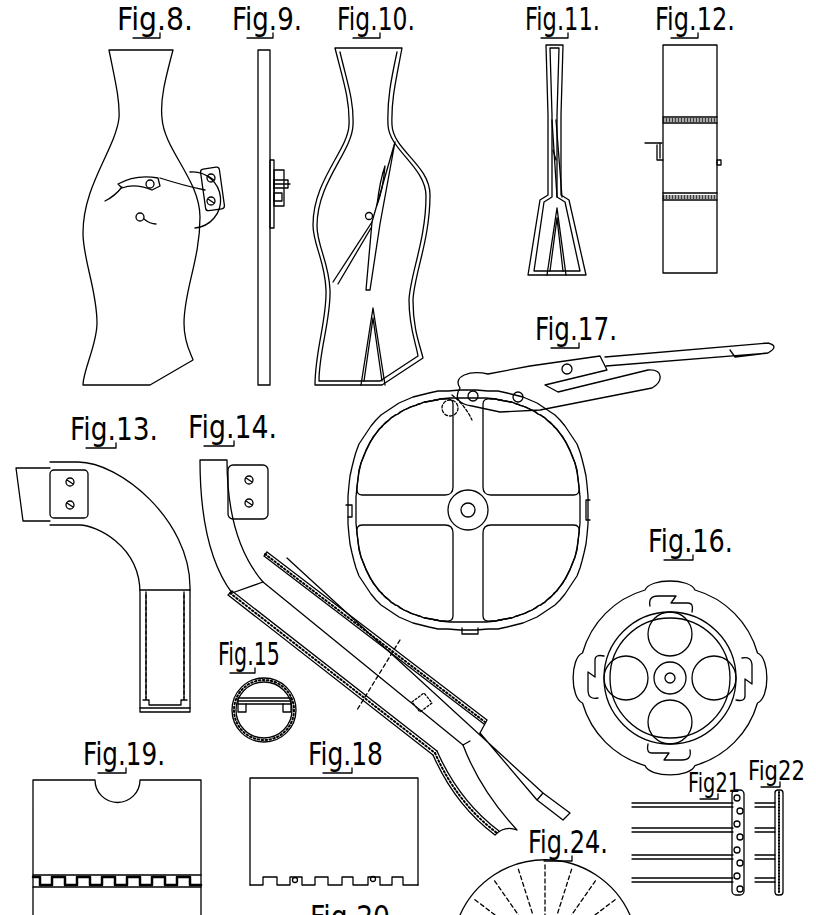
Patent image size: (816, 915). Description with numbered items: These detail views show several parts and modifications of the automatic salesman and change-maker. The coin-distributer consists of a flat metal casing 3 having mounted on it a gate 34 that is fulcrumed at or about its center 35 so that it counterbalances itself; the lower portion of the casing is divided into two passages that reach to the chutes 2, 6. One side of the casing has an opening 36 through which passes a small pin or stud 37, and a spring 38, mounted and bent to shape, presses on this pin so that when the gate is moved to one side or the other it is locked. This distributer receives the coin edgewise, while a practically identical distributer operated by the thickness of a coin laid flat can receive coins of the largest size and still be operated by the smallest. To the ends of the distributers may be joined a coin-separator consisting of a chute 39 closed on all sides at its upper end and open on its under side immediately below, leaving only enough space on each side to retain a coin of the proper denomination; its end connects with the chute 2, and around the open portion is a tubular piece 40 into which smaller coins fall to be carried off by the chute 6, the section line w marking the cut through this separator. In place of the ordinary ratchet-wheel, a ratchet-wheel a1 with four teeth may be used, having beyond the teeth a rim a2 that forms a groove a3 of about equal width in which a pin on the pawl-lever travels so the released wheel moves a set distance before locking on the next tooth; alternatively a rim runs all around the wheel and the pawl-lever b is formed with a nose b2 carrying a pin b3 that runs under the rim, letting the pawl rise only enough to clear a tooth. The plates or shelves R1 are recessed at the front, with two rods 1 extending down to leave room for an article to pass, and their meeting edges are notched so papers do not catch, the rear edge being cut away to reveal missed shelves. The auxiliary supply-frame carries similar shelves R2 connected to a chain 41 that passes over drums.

In FIG. 8, the flat metal casing 3 is at (154, 217).
In FIG. 9, the flat metal casing 3 is at (266, 280).
In FIG. 10, the flat metal casing 3 is at (425, 264).
In FIG. 11, the flat metal casing 3 is at (560, 97).
In FIG. 12, the flat metal casing 3 is at (720, 136).
In FIG. 10, the chute 2 is at (335, 382).
In FIG. 11, the chute 2 is at (535, 275).
In FIG. 14, the chute 2 is at (498, 758).
In FIG. 10, the chute 6 is at (398, 366).
In FIG. 11, the chute 6 is at (575, 275).
In FIG. 14, the chute 6 is at (475, 790).
In FIG. 10, the gate 34 is at (378, 228).
In FIG. 11, the gate 34 is at (562, 174).
In FIG. 8, the center 35 is at (156, 224).
In FIG. 10, the center 35 is at (365, 215).
In FIG. 11, the center 35 is at (557, 162).
In FIG. 8, the opening 36 is at (107, 203).
In FIG. 8, the pin or stud 37 is at (147, 188).
In FIG. 12, the pin or stud 37 is at (656, 161).
In FIG. 8, the spring 38 is at (172, 178).
In FIG. 13, the chute 39 is at (145, 566).
In FIG. 14, the chute 39 is at (238, 545).
In FIG. 15, the chute 39 is at (291, 697).
In FIG. 14, the tubular piece 40 is at (425, 683).
In FIG. 15, the tubular piece 40 is at (243, 725).
In FIG. 21, the chain 41 is at (730, 884).
In FIG. 22, the chain 41 is at (784, 880).
In FIG. 14, the section line w is at (388, 677).
In FIG. 17, the pawl-lever b is at (487, 382).
In FIG. 17, the nose b2 is at (447, 413).
In FIG. 17, the pin b3 is at (452, 440).
In FIG. 16, the ratchet-wheel a1 is at (712, 622).
In FIG. 16, the rim a2 is at (778, 675).
In FIG. 16, the groove a3 is at (745, 640).
In FIG. 19, the plates or shelves R1 is at (126, 845).
In FIG. 18, the plates or shelves R1 is at (340, 825).
In FIG. 21, the shelves R2 is at (646, 830).
In FIG. 22, the shelves R2 is at (762, 858).
In FIG. 18, the rods 1 is at (293, 885).